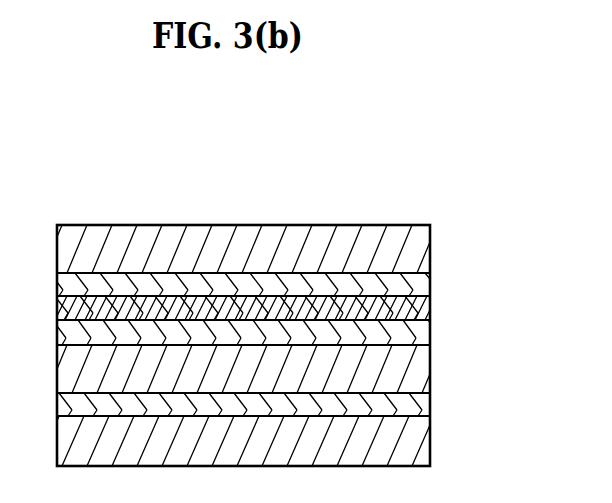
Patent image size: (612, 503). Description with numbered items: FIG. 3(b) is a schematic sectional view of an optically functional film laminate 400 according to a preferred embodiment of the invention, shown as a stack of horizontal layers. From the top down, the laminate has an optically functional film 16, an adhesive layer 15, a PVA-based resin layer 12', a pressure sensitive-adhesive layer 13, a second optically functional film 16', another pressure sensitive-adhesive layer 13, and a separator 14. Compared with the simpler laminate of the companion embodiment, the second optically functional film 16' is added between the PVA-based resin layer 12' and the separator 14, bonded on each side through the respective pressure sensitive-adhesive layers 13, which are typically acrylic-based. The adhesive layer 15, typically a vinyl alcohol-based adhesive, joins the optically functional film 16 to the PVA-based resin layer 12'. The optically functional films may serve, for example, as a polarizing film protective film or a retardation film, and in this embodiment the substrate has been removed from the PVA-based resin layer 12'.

The optically functional film laminate 400 is at (387, 198).
The optically functional film 16 is at (287, 245).
The adhesive layer 15 is at (415, 283).
The PVA-based resin layer 12' is at (291, 307).
The pressure sensitive-adhesive layer 13 is at (413, 333).
The second optically functional film 16' is at (291, 370).
The separator 14 is at (413, 438).